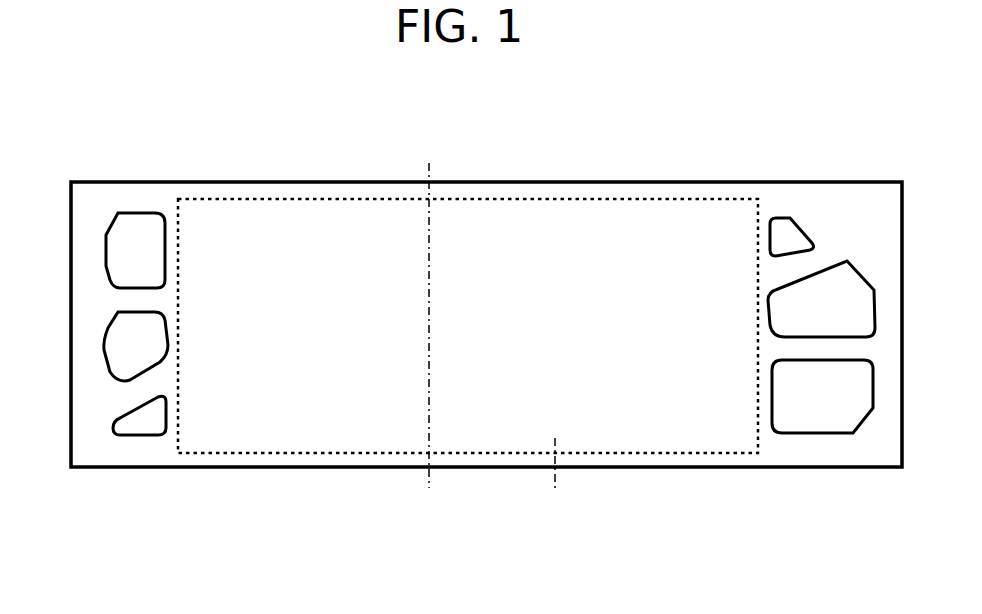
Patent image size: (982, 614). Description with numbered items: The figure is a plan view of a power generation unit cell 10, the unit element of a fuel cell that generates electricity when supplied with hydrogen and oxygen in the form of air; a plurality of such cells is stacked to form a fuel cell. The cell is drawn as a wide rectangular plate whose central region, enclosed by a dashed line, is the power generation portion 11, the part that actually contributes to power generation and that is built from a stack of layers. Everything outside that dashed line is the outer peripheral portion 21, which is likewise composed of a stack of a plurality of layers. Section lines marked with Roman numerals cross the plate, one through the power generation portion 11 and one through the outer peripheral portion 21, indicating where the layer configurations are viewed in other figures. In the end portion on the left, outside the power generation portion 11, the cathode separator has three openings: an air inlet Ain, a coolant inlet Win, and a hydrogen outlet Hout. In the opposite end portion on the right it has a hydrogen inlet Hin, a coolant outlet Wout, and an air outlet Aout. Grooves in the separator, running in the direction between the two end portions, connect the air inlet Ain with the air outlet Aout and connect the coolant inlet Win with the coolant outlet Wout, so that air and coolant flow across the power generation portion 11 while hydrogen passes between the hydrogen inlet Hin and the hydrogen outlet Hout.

The power generation unit cell 10 is at (82, 153).
The power generation portion 11 is at (618, 415).
The outer peripheral portion 21 is at (499, 458).
The air inlet Ain is at (142, 232).
The coolant inlet Win is at (135, 348).
The hydrogen outlet Hout is at (142, 420).
The hydrogen inlet Hin is at (786, 238).
The coolant outlet Wout is at (835, 303).
The air outlet Aout is at (822, 410).